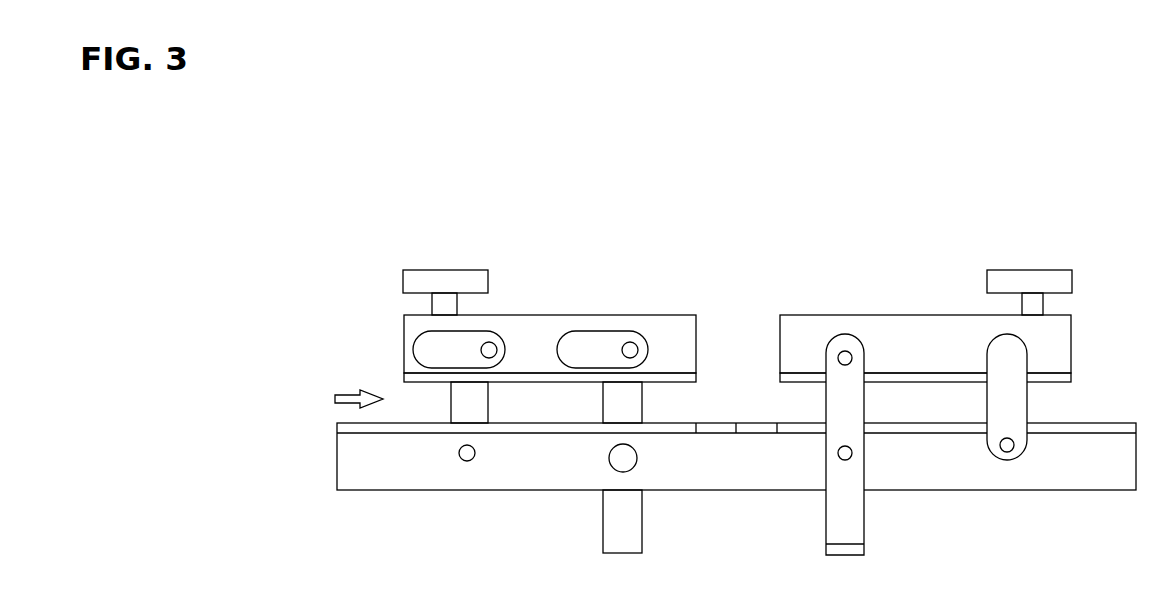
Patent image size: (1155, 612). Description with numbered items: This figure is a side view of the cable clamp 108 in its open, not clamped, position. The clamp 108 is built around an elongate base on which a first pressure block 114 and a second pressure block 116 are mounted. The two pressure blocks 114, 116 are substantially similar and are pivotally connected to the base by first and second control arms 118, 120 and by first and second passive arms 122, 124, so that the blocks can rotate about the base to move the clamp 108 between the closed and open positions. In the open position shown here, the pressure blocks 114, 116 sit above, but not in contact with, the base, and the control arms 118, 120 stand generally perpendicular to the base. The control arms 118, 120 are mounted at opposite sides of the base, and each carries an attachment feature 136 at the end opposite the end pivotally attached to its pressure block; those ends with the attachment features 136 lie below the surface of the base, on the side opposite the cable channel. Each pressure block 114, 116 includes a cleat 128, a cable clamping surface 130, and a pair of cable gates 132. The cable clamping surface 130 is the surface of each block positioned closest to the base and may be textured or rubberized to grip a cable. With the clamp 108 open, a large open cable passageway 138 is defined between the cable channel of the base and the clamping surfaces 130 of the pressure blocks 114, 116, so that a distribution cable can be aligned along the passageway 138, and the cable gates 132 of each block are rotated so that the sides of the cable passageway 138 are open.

The clamp 108 is at (893, 170).
The first pressure block 114 is at (529, 344).
The second pressure block 116 is at (876, 342).
The first control arm 118 is at (530, 467).
The second control arm 120 is at (853, 505).
The first passive arm 122 is at (470, 400).
The second passive arm 124 is at (1018, 398).
The cleat 128 is at (423, 282).
The cable clamping surface 130 is at (533, 378).
The cable gates 132 is at (435, 353).
The attachment feature 136 is at (615, 551).
The cable passageway 138 is at (348, 393).